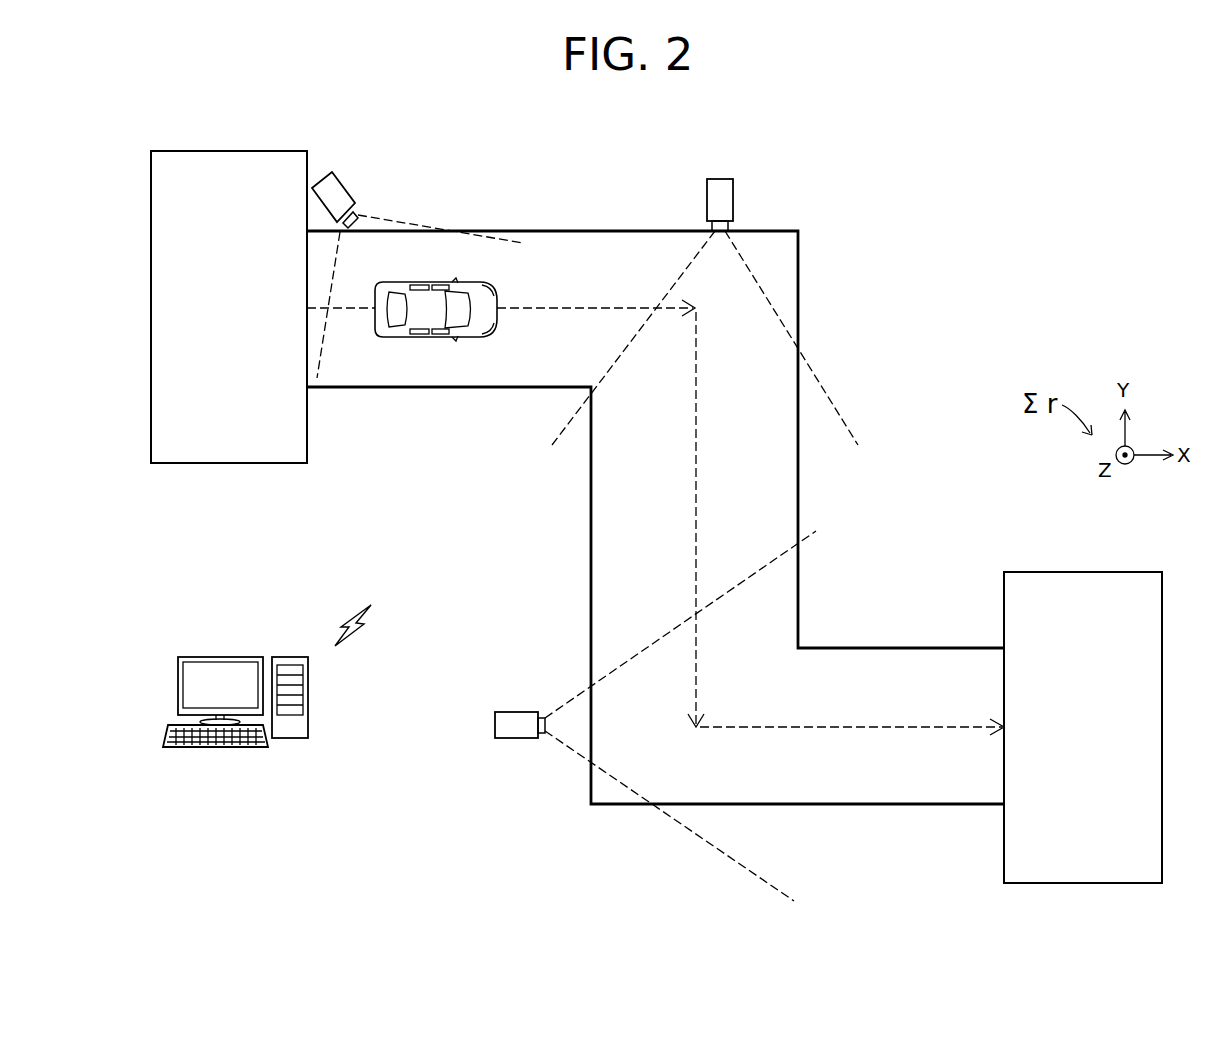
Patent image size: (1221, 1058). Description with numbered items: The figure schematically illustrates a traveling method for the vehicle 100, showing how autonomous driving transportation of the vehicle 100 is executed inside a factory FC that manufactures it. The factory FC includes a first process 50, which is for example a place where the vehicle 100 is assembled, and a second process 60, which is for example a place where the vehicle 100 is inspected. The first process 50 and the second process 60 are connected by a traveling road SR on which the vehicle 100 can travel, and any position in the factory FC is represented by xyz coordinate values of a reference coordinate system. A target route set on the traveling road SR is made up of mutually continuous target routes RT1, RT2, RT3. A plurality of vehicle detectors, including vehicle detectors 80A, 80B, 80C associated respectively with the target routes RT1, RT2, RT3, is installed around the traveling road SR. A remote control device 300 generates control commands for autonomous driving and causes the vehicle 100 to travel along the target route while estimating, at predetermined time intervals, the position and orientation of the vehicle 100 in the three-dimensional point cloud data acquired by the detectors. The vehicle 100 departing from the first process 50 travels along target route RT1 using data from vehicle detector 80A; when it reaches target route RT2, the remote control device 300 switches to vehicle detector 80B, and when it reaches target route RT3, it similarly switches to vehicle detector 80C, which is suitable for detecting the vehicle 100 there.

The first process 50 is at (273, 151).
The second process 60 is at (1110, 572).
The vehicle detector 80A is at (333, 173).
The vehicle detector 80B is at (722, 178).
The vehicle detector 80C is at (513, 712).
The vehicle 100 is at (431, 282).
The remote control device 300 is at (291, 656).
The traveling road SR is at (535, 231).
The target route RT1 is at (572, 308).
The target route RT2 is at (698, 318).
The target route RT3 is at (843, 727).
The factory FC is at (963, 204).